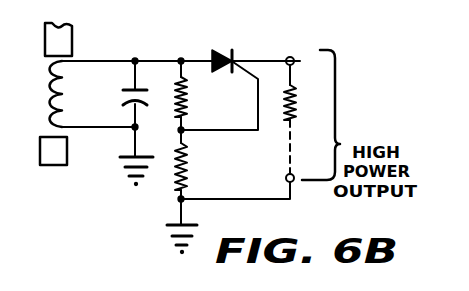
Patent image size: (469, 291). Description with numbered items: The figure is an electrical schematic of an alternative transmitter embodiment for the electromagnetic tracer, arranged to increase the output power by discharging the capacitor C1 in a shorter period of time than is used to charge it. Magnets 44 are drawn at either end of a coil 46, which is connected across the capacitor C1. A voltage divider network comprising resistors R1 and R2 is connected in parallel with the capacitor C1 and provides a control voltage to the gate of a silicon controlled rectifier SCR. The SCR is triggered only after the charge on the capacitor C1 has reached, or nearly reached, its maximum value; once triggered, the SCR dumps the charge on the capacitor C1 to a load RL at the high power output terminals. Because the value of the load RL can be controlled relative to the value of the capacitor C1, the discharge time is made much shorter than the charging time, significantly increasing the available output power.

The magnet 44 is at (70, 40).
The coil 46 is at (46, 85).
The capacitor C1 is at (122, 96).
The resistor R1 is at (193, 97).
The resistor R2 is at (195, 166).
The silicon controlled rectifier SCR is at (219, 79).
The load RL is at (303, 103).